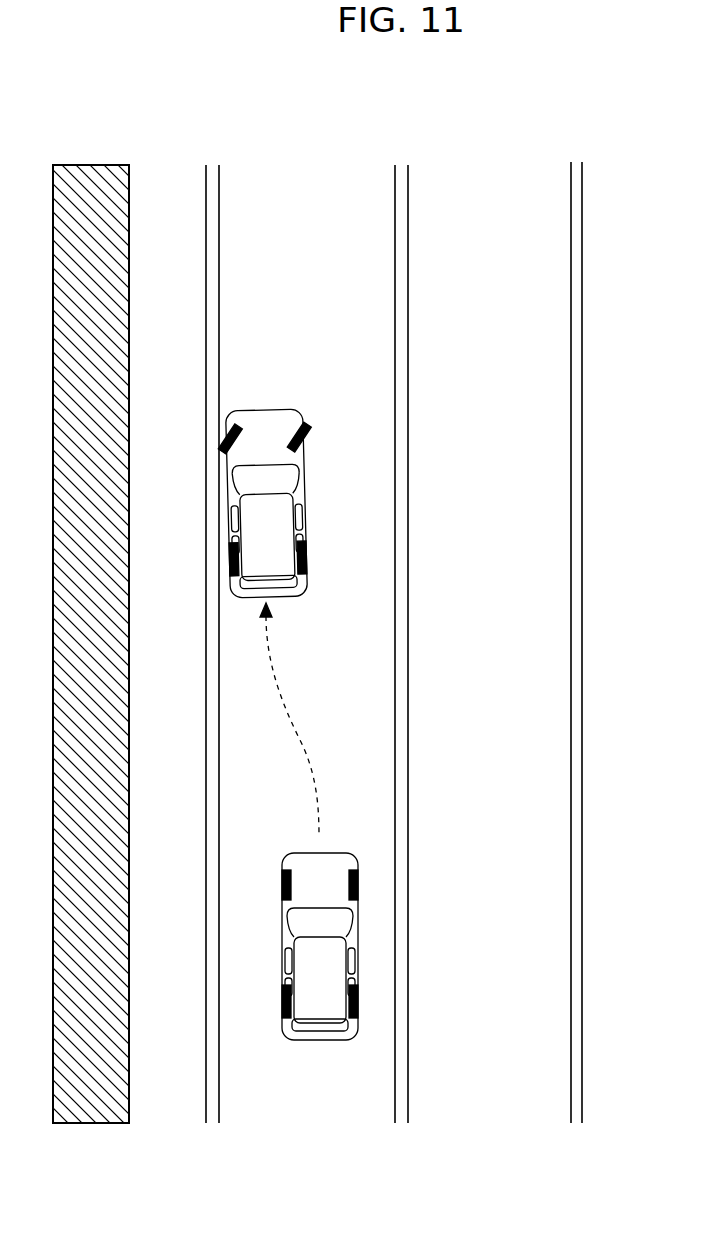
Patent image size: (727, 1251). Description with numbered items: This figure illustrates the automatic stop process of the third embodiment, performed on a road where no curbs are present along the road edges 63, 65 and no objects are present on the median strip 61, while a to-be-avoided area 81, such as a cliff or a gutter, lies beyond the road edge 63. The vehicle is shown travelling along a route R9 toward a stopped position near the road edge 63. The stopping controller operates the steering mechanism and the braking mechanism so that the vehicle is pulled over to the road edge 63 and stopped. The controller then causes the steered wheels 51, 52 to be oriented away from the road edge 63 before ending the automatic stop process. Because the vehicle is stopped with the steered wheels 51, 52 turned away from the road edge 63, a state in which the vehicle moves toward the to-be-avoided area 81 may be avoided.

The steered wheel 51 is at (256, 399).
The steered wheel 52 is at (323, 409).
The median strip 61 is at (405, 220).
The road edge 63 is at (205, 217).
The road edge 65 is at (578, 231).
The to-be-avoided area 81 is at (87, 165).
The travel route R9 is at (296, 719).